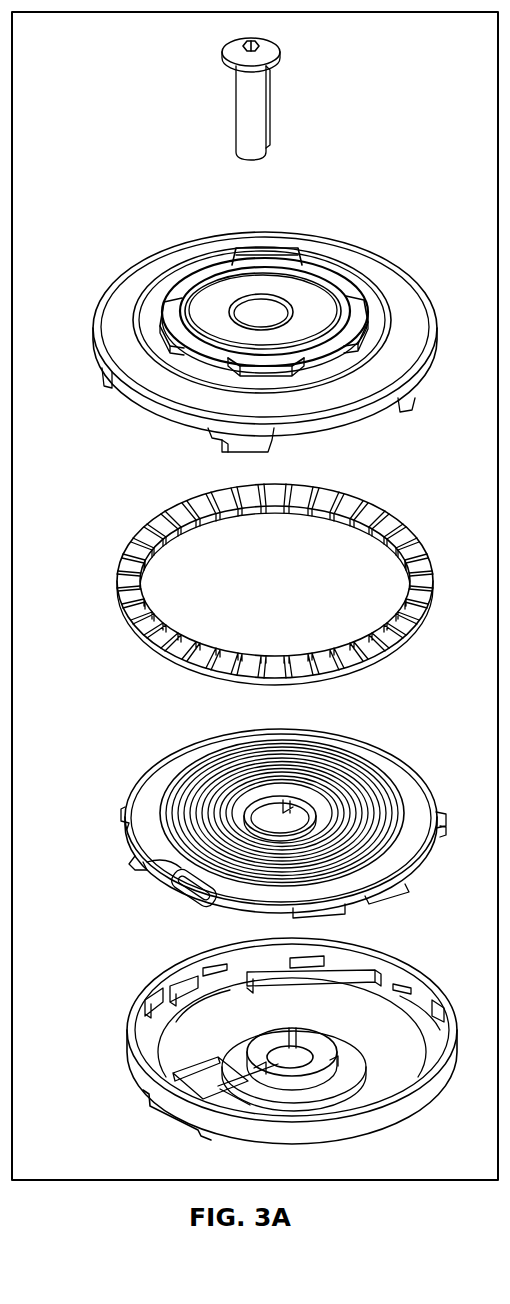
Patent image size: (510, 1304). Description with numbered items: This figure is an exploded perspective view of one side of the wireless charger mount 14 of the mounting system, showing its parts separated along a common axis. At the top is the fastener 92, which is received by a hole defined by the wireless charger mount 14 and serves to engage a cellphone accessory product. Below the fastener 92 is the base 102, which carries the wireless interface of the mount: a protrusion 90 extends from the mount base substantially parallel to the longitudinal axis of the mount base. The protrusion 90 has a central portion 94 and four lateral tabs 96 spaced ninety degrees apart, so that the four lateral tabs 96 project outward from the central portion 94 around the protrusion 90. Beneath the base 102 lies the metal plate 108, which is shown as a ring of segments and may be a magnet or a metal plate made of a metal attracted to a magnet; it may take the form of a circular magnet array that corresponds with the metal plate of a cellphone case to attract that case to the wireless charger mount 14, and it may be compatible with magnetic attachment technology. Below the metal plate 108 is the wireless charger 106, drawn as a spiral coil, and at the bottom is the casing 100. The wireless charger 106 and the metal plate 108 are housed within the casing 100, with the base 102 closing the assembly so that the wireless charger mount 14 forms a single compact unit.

The wireless charger mount 14 is at (122, 52).
The fastener 92 is at (270, 97).
The base 102 is at (150, 385).
The central portion 94 is at (236, 272).
The lateral tabs 96 is at (270, 252).
The protrusion 90 is at (296, 290).
The metal plate 108 is at (420, 556).
The wireless charger 106 is at (172, 772).
The casing 100 is at (430, 1108).